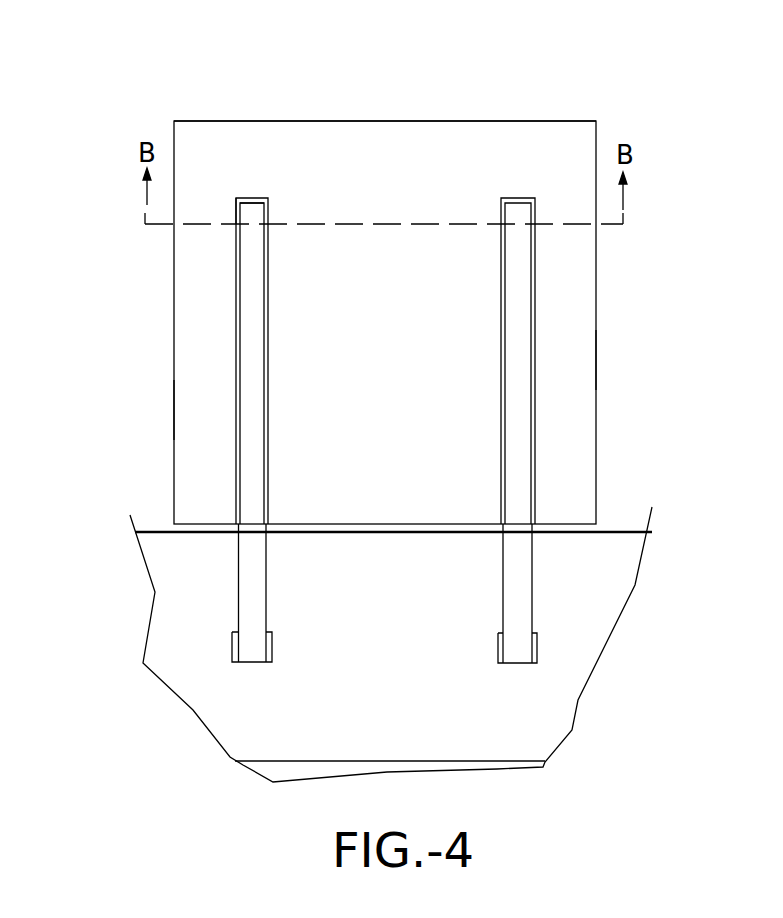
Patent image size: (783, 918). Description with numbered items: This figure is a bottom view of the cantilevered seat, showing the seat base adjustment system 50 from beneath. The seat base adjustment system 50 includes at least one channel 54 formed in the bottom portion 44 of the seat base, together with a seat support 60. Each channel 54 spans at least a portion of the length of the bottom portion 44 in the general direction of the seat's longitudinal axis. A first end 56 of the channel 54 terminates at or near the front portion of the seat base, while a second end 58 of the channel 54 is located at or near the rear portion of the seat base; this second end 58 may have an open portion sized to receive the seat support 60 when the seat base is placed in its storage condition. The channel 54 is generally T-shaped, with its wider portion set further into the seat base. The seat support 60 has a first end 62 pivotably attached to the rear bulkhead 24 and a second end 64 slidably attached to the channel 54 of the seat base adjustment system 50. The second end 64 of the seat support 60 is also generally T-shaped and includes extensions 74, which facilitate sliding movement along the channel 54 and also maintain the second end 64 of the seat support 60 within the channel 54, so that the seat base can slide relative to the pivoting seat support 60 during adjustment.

The rear bulkhead 24 is at (358, 670).
The bottom portion 44 is at (578, 450).
The seat base adjustment system 50 is at (630, 275).
The channel 54 is at (267, 243).
The first end 56 is at (248, 198).
The second end 58 is at (237, 513).
The seat support 60 is at (208, 418).
The first end 62 is at (532, 663).
The second end 64 is at (253, 213).
The extensions 74 is at (237, 210).